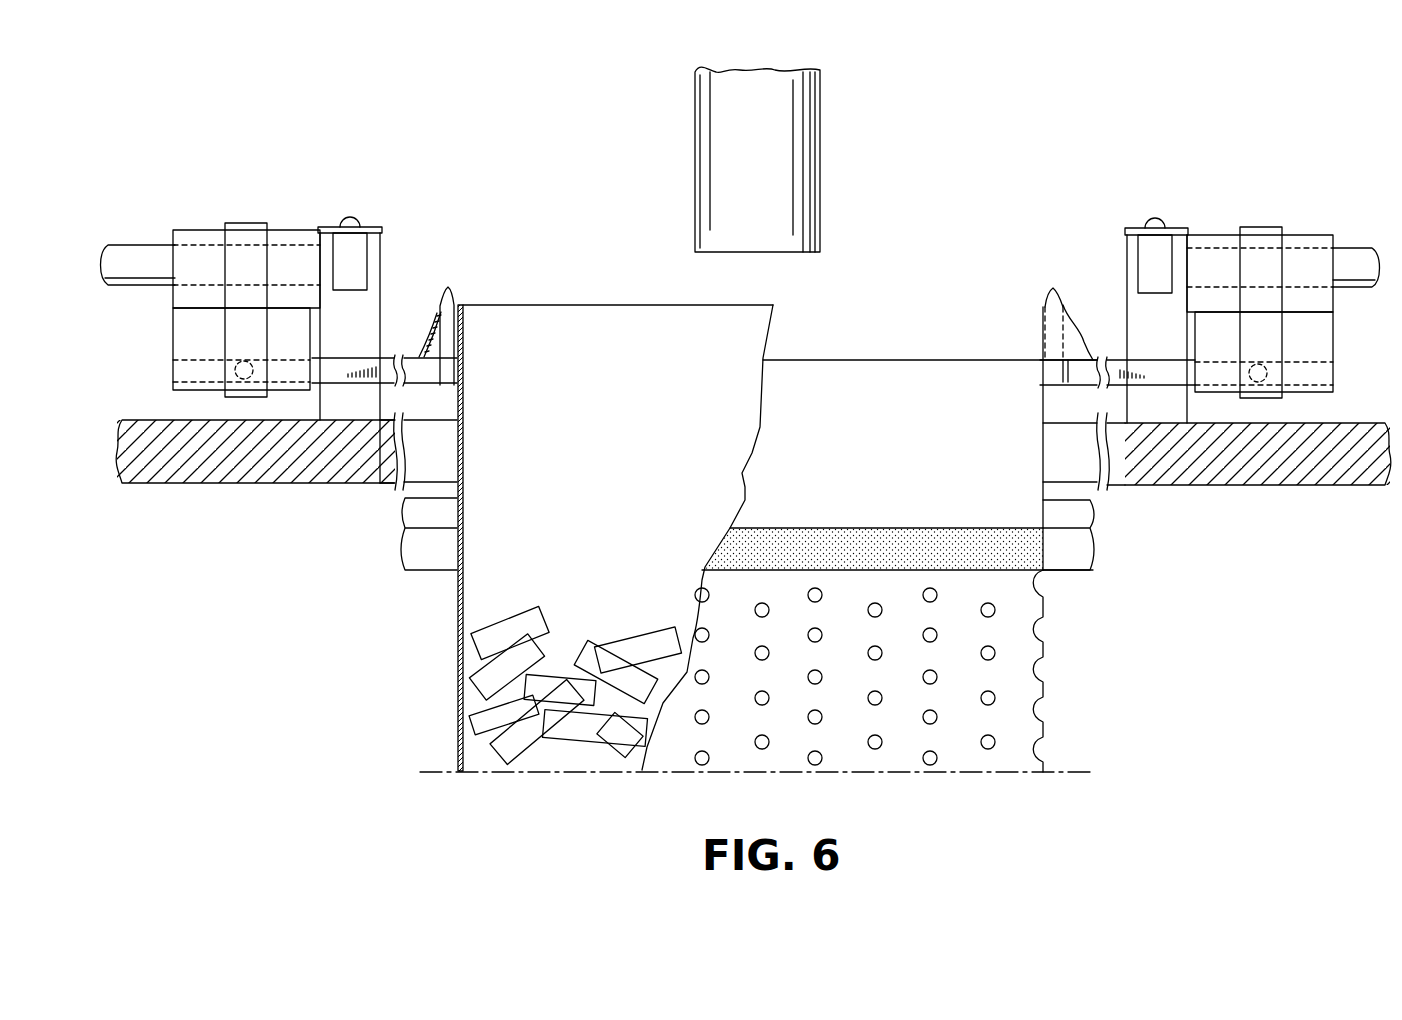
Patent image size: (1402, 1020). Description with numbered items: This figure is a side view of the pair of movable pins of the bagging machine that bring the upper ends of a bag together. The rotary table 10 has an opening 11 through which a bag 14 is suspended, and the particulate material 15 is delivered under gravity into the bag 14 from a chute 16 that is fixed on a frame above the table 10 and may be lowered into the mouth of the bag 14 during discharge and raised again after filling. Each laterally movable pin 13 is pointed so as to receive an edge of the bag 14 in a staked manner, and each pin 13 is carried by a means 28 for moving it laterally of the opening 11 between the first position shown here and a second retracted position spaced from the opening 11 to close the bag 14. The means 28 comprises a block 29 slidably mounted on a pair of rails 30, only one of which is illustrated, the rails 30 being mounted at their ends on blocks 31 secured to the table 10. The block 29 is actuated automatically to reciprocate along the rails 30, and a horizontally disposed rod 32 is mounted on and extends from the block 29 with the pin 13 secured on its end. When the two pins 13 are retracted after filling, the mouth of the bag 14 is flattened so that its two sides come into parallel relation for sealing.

The table 10 is at (165, 420).
The opening 11 is at (380, 485).
The laterally movable pin 13 is at (433, 321).
The bag 14 is at (455, 672).
The particulate material 15 is at (667, 643).
The chute 16 is at (698, 120).
The means for moving the pin 28 is at (254, 214).
The block 29 is at (176, 357).
The rail 30 is at (130, 246).
The block 31 is at (382, 244).
The rod 32 is at (384, 360).